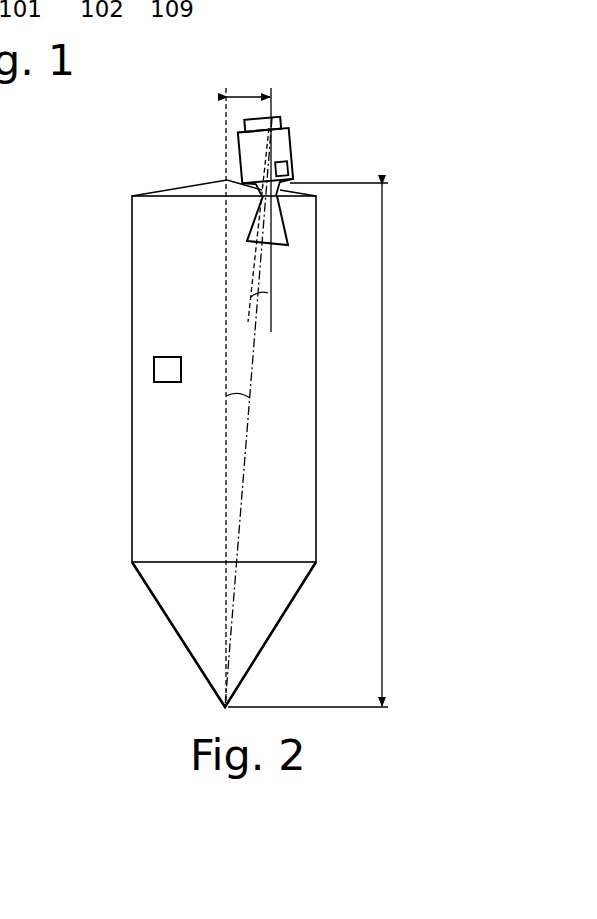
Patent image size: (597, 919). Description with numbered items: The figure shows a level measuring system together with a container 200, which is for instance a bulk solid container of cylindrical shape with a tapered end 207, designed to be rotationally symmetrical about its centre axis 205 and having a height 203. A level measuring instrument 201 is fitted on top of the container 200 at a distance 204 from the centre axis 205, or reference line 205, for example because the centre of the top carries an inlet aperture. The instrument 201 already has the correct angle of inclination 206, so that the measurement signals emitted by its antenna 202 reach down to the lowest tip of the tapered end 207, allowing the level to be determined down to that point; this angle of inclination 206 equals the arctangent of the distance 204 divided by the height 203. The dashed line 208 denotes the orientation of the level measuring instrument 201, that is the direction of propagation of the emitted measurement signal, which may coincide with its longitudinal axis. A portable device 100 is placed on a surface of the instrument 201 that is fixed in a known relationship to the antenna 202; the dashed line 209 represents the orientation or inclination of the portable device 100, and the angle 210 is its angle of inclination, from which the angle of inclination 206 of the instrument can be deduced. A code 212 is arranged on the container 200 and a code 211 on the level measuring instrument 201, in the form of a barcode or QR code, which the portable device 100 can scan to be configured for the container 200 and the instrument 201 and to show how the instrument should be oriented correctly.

The portable device 100 is at (335, 127).
The container 200 is at (132, 437).
The level measuring instrument 201 is at (290, 145).
The antenna 202 is at (282, 237).
The height 203 is at (382, 213).
The distance 204 is at (250, 96).
The centre axis 205 is at (222, 127).
The angle of inclination 206 is at (245, 409).
The tapered end 207 is at (150, 606).
The orientation 208 is at (247, 472).
The orientation of the portable device 209 is at (252, 228).
The angle 210 is at (257, 283).
The code 211 is at (291, 170).
The code 212 is at (154, 365).